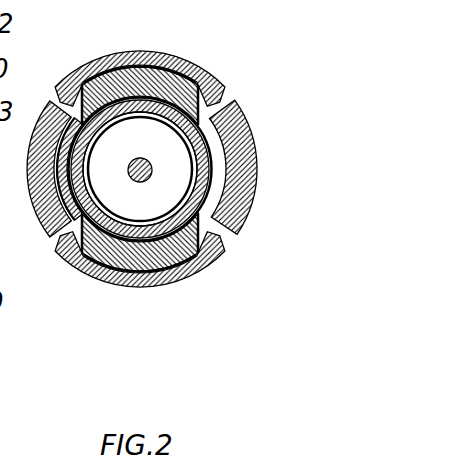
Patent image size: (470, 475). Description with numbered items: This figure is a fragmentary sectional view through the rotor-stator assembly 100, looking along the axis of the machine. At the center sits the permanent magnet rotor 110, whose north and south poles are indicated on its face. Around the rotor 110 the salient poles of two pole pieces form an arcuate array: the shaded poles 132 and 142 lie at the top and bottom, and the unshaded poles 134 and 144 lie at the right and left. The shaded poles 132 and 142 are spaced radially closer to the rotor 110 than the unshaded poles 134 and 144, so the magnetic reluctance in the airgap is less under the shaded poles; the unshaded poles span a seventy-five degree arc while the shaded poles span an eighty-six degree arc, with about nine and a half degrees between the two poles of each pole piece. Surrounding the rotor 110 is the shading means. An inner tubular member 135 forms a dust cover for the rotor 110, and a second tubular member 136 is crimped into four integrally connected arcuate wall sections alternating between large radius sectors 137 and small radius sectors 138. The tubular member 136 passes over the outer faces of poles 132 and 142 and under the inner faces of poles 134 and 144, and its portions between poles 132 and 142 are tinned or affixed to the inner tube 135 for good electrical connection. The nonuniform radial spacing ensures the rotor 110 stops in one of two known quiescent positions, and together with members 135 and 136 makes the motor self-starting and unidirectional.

The rotor-stator assembly 100 is at (163, 199).
The permanent magnet rotor 110 is at (140, 128).
The salient pole 132 is at (200, 72).
The salient pole 134 is at (268, 164).
The tubular member 135 is at (116, 290).
The second tubular member 136 is at (91, 276).
The large radius sector 137 is at (113, 280).
The small radius sector 138 is at (220, 123).
The salient pole 142 is at (150, 282).
The salient pole 144 is at (33, 182).